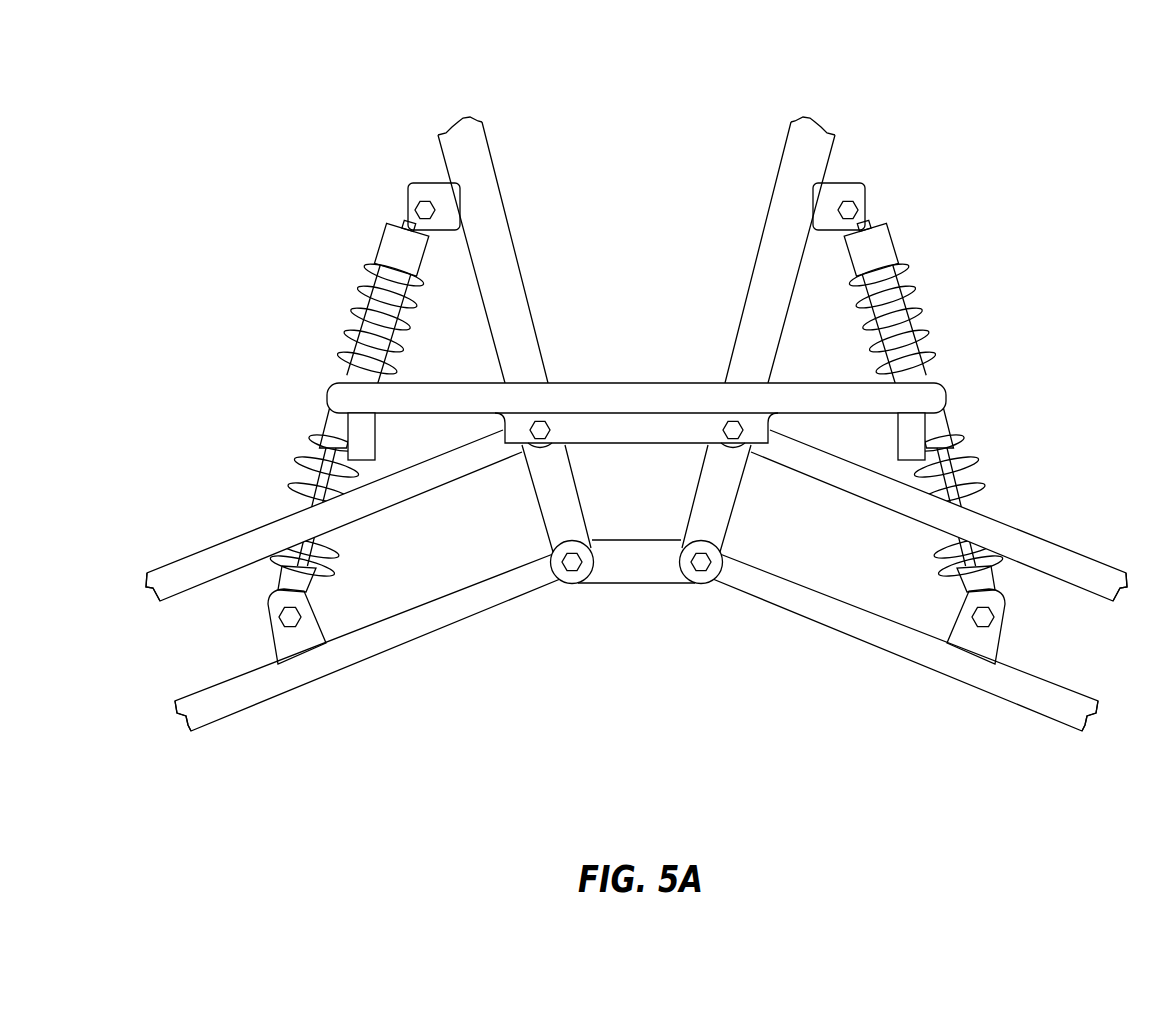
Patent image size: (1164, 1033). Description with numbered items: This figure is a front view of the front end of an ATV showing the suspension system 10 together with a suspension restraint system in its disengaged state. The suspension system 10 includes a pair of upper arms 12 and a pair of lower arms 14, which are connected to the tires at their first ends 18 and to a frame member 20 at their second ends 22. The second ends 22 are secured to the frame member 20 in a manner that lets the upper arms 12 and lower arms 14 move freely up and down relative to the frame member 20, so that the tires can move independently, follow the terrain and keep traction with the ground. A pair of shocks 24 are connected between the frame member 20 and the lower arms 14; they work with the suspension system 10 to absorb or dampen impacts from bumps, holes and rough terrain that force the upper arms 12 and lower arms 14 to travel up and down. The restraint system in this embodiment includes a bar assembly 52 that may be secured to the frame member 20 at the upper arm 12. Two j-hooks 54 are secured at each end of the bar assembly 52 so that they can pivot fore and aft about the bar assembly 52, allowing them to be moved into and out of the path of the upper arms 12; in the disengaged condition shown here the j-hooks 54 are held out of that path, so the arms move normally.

The suspension system 10 is at (926, 88).
The upper arms 12 is at (303, 517).
The lower arms 14 is at (490, 593).
The first ends 18 is at (205, 717).
The frame member 20 is at (487, 277).
The second ends 22 is at (770, 450).
The shocks 24 is at (377, 330).
The bar assembly 52 is at (910, 394).
The j-hooks 54 is at (355, 430).